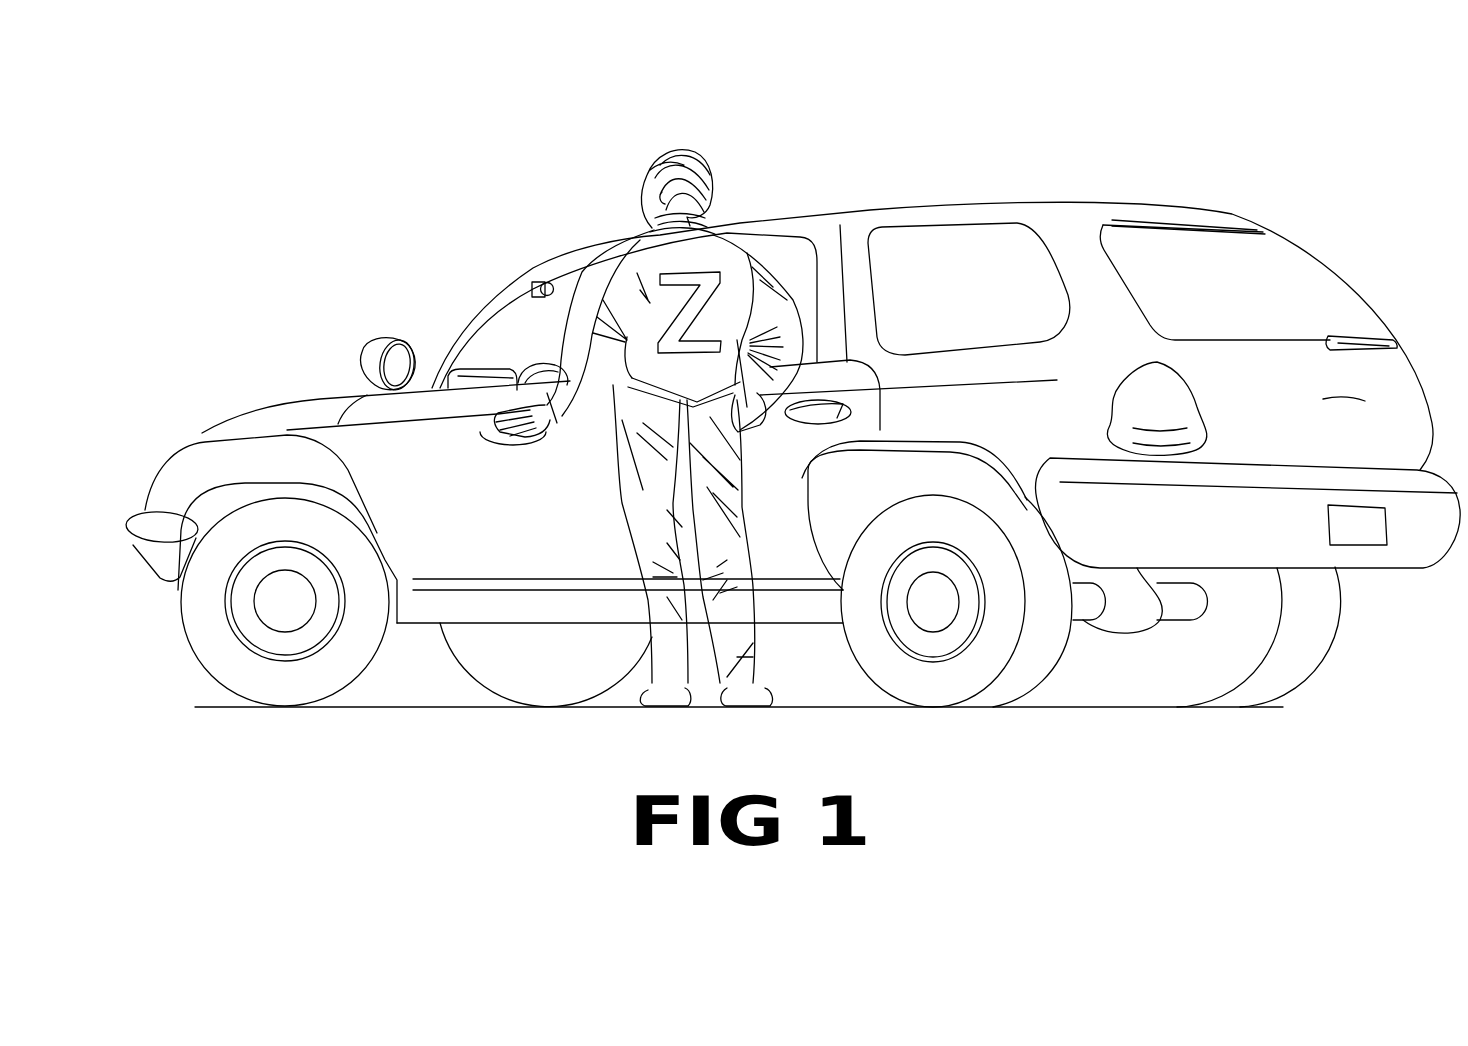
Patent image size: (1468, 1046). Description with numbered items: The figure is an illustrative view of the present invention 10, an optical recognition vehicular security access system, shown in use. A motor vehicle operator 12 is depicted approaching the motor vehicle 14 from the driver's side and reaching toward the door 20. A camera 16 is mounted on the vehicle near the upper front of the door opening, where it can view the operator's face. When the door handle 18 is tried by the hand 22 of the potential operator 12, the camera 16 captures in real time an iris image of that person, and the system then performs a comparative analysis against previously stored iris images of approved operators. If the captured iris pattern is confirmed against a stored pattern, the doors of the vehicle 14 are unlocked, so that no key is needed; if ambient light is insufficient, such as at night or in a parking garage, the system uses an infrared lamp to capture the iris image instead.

The present invention 10 is at (586, 158).
The operator 12 is at (732, 222).
The vehicle 14 is at (858, 222).
The camera 16 is at (542, 278).
The handle 18 is at (478, 435).
The door 20 is at (427, 550).
The hand 22 is at (552, 435).